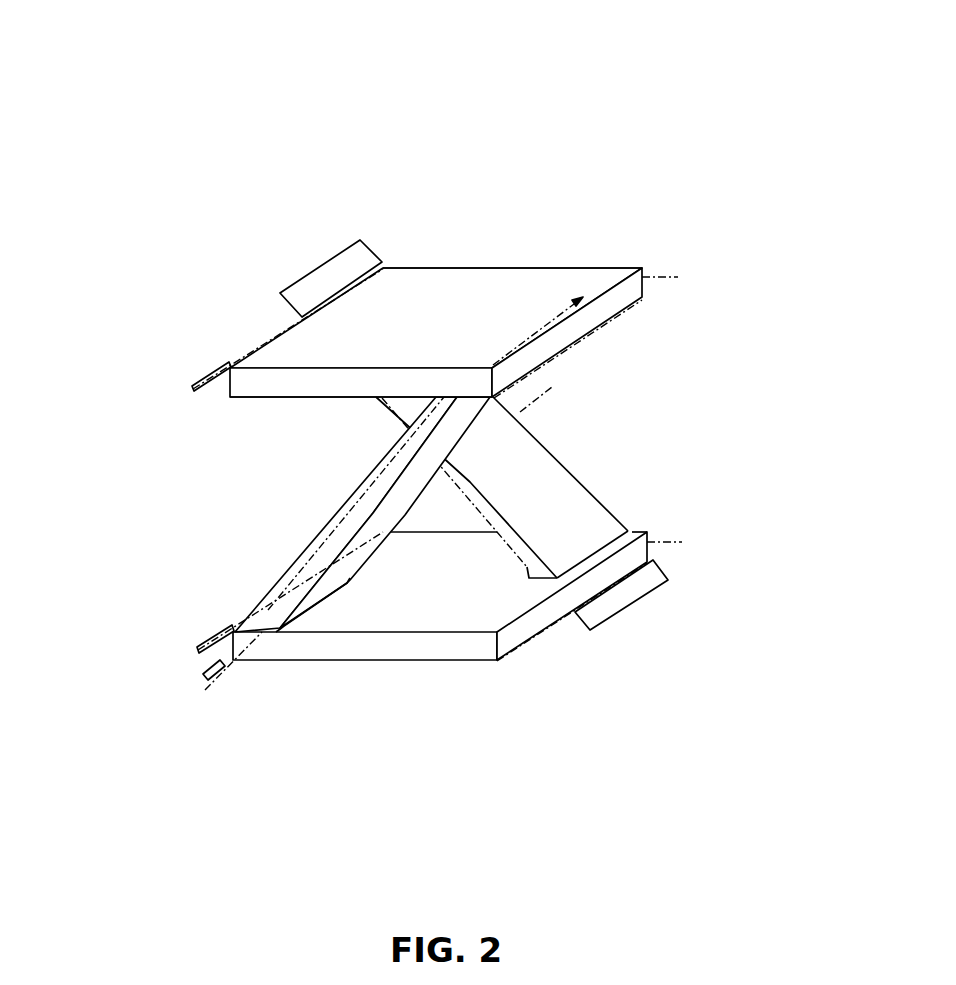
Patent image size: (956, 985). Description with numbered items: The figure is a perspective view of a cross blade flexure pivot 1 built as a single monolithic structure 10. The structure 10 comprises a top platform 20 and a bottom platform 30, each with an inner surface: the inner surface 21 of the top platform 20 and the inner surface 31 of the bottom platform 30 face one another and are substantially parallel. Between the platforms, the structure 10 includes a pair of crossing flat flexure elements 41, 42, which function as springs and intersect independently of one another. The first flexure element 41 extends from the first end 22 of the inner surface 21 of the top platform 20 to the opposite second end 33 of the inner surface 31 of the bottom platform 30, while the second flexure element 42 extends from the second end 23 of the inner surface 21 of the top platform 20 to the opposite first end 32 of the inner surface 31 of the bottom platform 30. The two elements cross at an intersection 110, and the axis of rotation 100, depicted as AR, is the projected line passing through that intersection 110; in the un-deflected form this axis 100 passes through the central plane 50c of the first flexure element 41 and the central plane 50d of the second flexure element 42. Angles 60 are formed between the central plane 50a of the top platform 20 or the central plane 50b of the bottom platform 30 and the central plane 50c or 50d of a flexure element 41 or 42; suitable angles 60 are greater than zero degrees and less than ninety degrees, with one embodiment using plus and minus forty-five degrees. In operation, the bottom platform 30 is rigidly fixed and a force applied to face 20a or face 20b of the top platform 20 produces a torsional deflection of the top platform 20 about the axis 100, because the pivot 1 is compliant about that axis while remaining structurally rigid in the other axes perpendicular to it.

The cross blade flexure pivot 1 is at (533, 82).
The monolithic structure 10 is at (180, 525).
The top platform 20 is at (523, 290).
The face of top platform 20a is at (626, 295).
The face of top platform 20b is at (223, 379).
The inner surface of top platform 21 is at (283, 398).
The first end of inner surface of top platform 22 is at (478, 400).
The second end of inner surface of top platform 23 is at (402, 262).
The bottom platform 30 is at (393, 660).
The inner surface of bottom platform 31 is at (440, 598).
The first end of inner surface of bottom platform 32 is at (640, 523).
The second end of inner surface of bottom platform 33 is at (245, 620).
The first flexure element 41 is at (382, 480).
The second flexure element 42 is at (578, 500).
The central plane of top platform 50a is at (209, 382).
The central plane of bottom platform 50b is at (213, 622).
The central plane of first flexure element 50c is at (213, 672).
The central plane of second flexure element 50d is at (370, 250).
The angles 60 is at (528, 360).
The axis of rotation 100 is at (552, 387).
The intersection of the pair of crossing flat flexure elements 110 is at (440, 482).